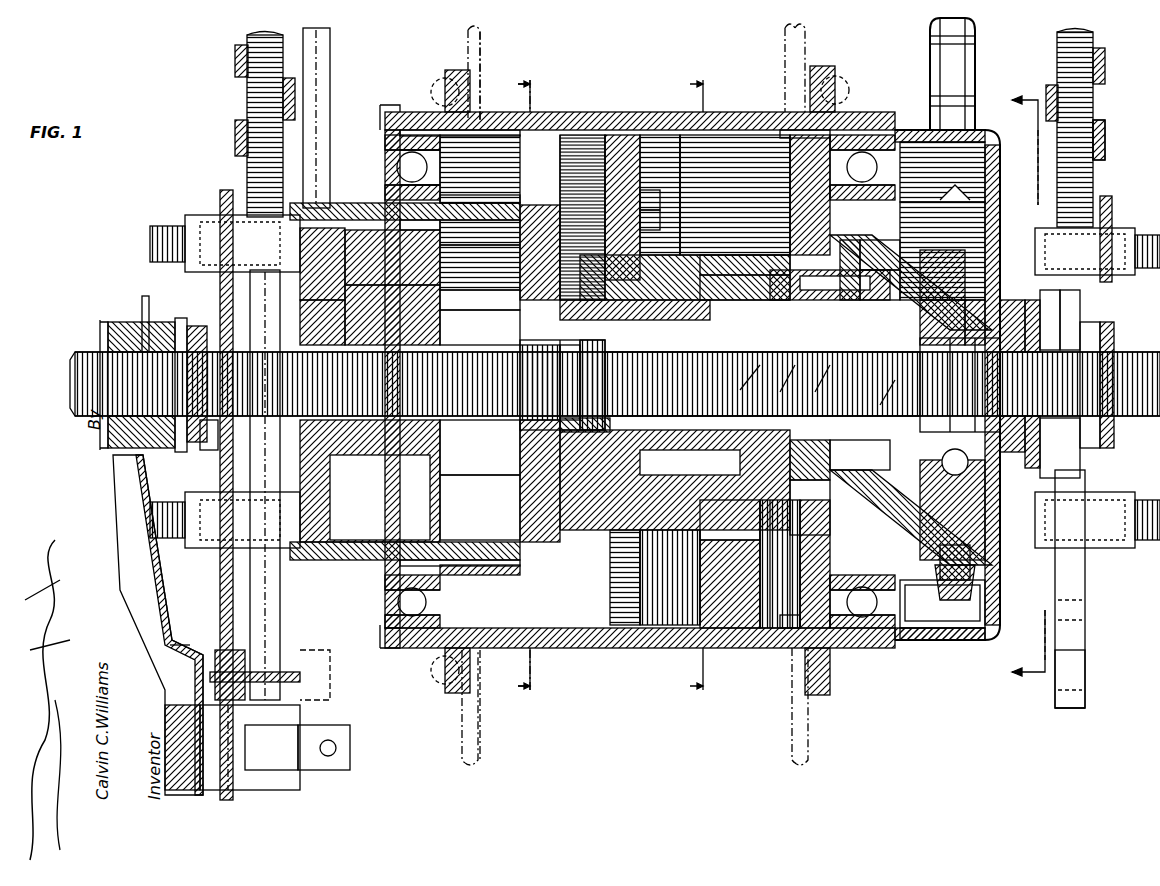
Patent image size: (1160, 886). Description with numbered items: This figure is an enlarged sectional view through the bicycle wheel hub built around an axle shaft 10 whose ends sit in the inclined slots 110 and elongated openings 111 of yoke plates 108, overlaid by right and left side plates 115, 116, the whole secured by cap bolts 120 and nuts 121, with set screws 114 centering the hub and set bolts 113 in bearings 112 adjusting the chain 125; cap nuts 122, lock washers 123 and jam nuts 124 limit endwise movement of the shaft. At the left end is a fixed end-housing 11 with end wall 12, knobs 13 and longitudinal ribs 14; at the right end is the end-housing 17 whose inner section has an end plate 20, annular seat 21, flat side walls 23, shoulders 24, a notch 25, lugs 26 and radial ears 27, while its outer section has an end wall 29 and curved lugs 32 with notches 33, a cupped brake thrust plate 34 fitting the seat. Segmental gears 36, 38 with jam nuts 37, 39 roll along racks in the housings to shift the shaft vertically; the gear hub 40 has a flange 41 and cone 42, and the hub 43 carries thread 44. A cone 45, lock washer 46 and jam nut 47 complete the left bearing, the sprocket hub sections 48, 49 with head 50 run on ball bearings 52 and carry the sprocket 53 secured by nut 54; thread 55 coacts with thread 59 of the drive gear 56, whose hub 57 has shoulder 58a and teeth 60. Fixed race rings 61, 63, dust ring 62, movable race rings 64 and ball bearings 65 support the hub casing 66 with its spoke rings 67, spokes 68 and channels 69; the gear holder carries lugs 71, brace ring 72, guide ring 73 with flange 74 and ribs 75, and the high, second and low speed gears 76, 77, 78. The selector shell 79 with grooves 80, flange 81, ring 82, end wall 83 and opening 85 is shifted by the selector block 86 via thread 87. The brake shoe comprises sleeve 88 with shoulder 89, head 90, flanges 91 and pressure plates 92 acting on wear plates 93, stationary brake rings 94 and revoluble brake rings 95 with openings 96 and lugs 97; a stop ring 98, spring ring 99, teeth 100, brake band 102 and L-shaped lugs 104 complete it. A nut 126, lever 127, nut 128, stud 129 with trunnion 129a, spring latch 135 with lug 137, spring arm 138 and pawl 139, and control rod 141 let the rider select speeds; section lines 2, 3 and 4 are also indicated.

The section line 2- 2 is at (1021, 386).
The section line 3- 3 is at (706, 383).
The section line 4- 4 is at (514, 395).
The axle shaft 10 is at (1125, 330).
The end-housing 11 is at (462, 200).
The end wall 12 is at (280, 455).
The knobs 13 is at (335, 294).
The longitudinal ribs 14 is at (365, 206).
The end-housing 17 is at (600, 150).
The end plate 20 is at (902, 606).
The annular seat 21 is at (911, 266).
The side walls 23 is at (807, 505).
The shoulders 24 is at (911, 402).
The notch 25 is at (807, 460).
The lugs 26 is at (1000, 612).
The radial ears 27 is at (1070, 320).
The end wall 29 is at (1056, 311).
The curved lugs 32 is at (915, 642).
The notches 33 is at (955, 195).
The brake thrust plate 34 is at (877, 262).
The segmental gear 36 is at (1015, 319).
The jam nut 37 is at (1053, 319).
The segmental gear 38 is at (318, 300).
The jam nut 39 is at (298, 264).
The elongated hub 40 is at (1040, 447).
The flange 41 is at (969, 305).
The cone 42 is at (895, 383).
The elongated hub 43 is at (480, 327).
The quadruple left hand thread 44 is at (362, 318).
The cone 45 is at (545, 448).
The lock washer 46 is at (525, 412).
The jam nut 47 is at (540, 440).
The sprocket hub section 48 is at (829, 368).
The sprocket hub section 49 is at (762, 383).
The head 50 is at (992, 297).
The ball bearings 52 is at (760, 385).
The sprocket 53 is at (795, 368).
The nut 54 is at (928, 252).
The quadruple left hand thread 55 is at (758, 368).
The drive gear 56 is at (650, 198).
The elongated hub 57 is at (640, 260).
The internal shoulder 58a is at (675, 474).
The quadruple left hand thread 59 is at (877, 285).
The teeth 60 is at (650, 218).
The fixed race ring 61 is at (450, 200).
The dust ring 62 is at (388, 152).
The fixed race ring 63 is at (942, 172).
The movable race rings 64 is at (395, 116).
The ball bearings 65 is at (388, 170).
The hub casing 66 is at (668, 118).
The spoke rings 67 is at (460, 76).
The spokes 68 is at (492, 50).
The longitudinal channels 69 is at (745, 118).
The lateral lugs 71 is at (618, 135).
The brace ring 72 is at (735, 195).
The guide ring 73 is at (520, 600).
The flange 74 is at (520, 568).
The ribs 75 is at (515, 115).
The high speed gear 76 is at (525, 212).
The second speed gear 77 is at (900, 130).
The low speed gear 78 is at (660, 195).
The selector shell 79 is at (405, 505).
The grooves 80 is at (455, 250).
The annular flange 81 is at (520, 510).
The ring 82 is at (455, 270).
The end wall 83 is at (420, 235).
The opening 85 is at (445, 300).
The selector block 86 is at (440, 465).
The quadruple left hand thread 87 is at (500, 460).
The sleeve 88 is at (700, 260).
The annular shoulder 89 is at (730, 262).
The ovate head 90 is at (648, 535).
The vertical flanges 91 is at (762, 540).
The pressure plates 92 is at (762, 580).
The wear plates 93 is at (762, 560).
The stationary brake rings 94 is at (762, 600).
The revoluble brake rings 95 is at (775, 614).
The openings 96 is at (790, 178).
The lateral lugs 97 is at (848, 130).
The stop ring 98 is at (730, 581).
The spring ring 99 is at (720, 515).
The teeth 100 is at (640, 575).
The brake band 102 is at (830, 285).
The L-shaped lugs 104 is at (840, 500).
The yoke plates 108 is at (1086, 672).
The inclined slots 110 is at (1084, 700).
The elongated openings 111 is at (1080, 330).
The bearings 112 is at (1100, 140).
The set bolts 113 is at (248, 96).
The set screws 114 is at (220, 580).
The right side plate 115 is at (1108, 196).
The left side plate 116 is at (238, 200).
The cap bolts 120 is at (182, 240).
The nuts 121 is at (224, 215).
The cap nuts 122 is at (212, 455).
The lock washers 123 is at (205, 330).
The jam nuts 124 is at (180, 322).
The sprocket chain 125 is at (978, 62).
The nut 126 is at (140, 305).
The lever 127 is at (165, 640).
The nut 128 is at (118, 330).
The stud 129 is at (290, 785).
The trunnion 129a is at (345, 728).
The spring latch 135 is at (165, 688).
The lateral lug 137 is at (200, 636).
The spring arm 138 is at (248, 680).
The V-shaped pawl 139 is at (240, 655).
The control rod 141 is at (318, 680).